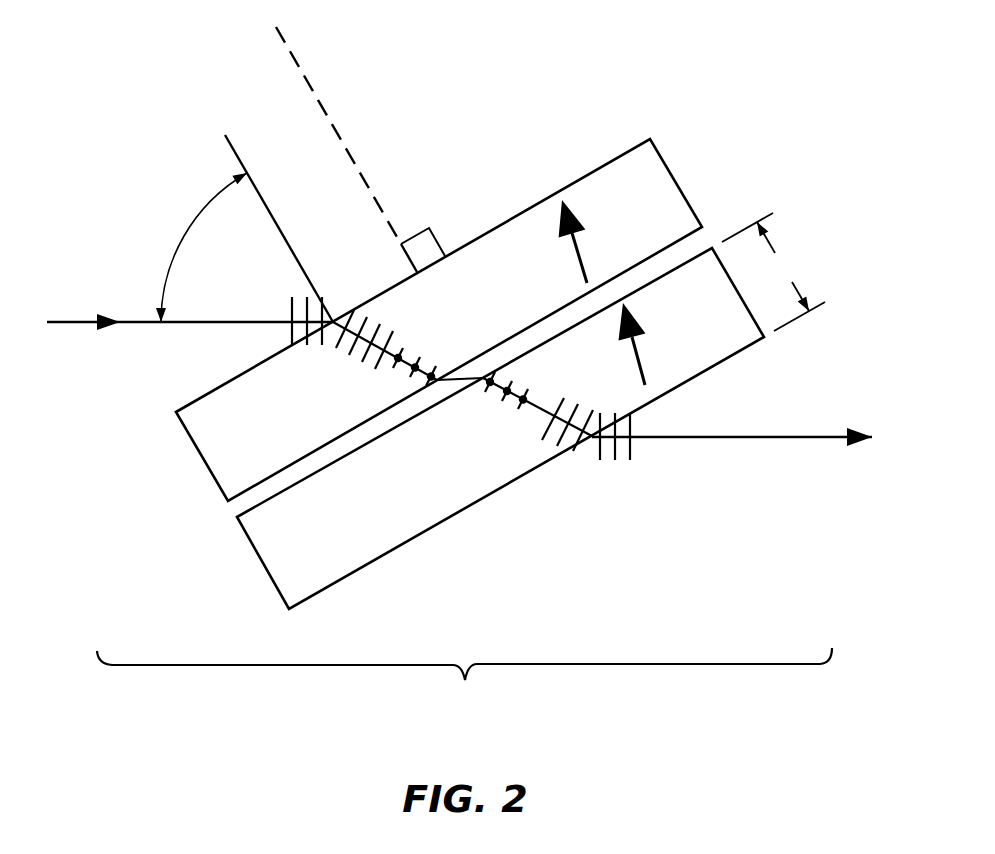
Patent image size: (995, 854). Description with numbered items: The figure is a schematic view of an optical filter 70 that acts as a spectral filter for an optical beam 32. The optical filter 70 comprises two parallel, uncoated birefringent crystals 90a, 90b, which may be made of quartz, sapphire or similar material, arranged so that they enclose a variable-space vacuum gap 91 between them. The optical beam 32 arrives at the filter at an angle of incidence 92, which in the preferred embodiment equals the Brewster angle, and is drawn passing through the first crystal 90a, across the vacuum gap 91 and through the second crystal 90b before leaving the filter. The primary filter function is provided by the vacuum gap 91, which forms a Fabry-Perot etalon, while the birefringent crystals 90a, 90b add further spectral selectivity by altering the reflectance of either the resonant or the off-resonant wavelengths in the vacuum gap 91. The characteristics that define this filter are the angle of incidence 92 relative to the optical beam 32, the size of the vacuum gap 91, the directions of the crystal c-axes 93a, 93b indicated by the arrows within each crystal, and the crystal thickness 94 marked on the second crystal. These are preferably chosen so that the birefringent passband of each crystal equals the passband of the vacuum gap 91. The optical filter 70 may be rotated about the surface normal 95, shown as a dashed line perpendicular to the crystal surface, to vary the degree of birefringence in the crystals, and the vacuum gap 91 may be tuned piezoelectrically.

The optical beam 32 is at (78, 321).
The optical filter 70 is at (464, 680).
The birefringent crystal 90a is at (185, 445).
The birefringent crystal 90b is at (244, 549).
The vacuum gap 91 is at (232, 508).
The angle of incidence 92 is at (244, 228).
The crystal c-axis direction 93a is at (586, 254).
The crystal c-axis direction 93b is at (643, 357).
The crystal thickness 94 is at (773, 272).
The surface normal 95 is at (302, 66).